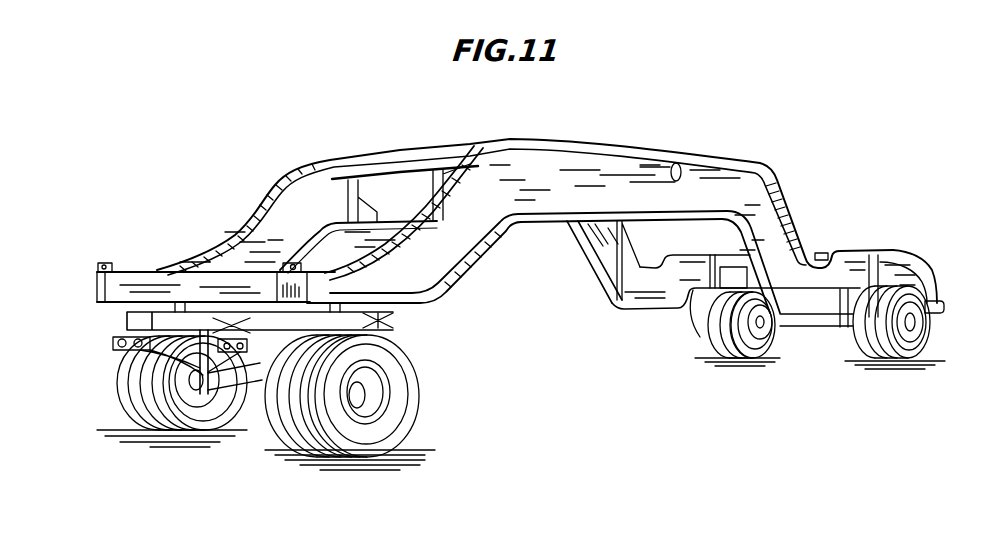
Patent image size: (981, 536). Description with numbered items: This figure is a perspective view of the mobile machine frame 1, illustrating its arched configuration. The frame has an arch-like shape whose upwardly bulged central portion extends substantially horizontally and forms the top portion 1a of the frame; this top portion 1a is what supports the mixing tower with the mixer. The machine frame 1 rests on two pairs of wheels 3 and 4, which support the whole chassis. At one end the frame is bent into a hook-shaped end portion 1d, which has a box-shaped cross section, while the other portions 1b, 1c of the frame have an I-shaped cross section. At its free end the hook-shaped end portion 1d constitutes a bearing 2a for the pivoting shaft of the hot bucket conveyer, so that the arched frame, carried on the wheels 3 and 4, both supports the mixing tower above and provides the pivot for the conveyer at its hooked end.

The machine frame 1 is at (577, 205).
The top portion 1a is at (619, 135).
The gooseneck ramp portions 1b is at (297, 167).
The intermediate rail portion 1c is at (373, 280).
The hook-shaped end portion 1d is at (913, 263).
The bearing 2a is at (933, 304).
The wheels 3 is at (712, 330).
The wheels 4 is at (393, 368).